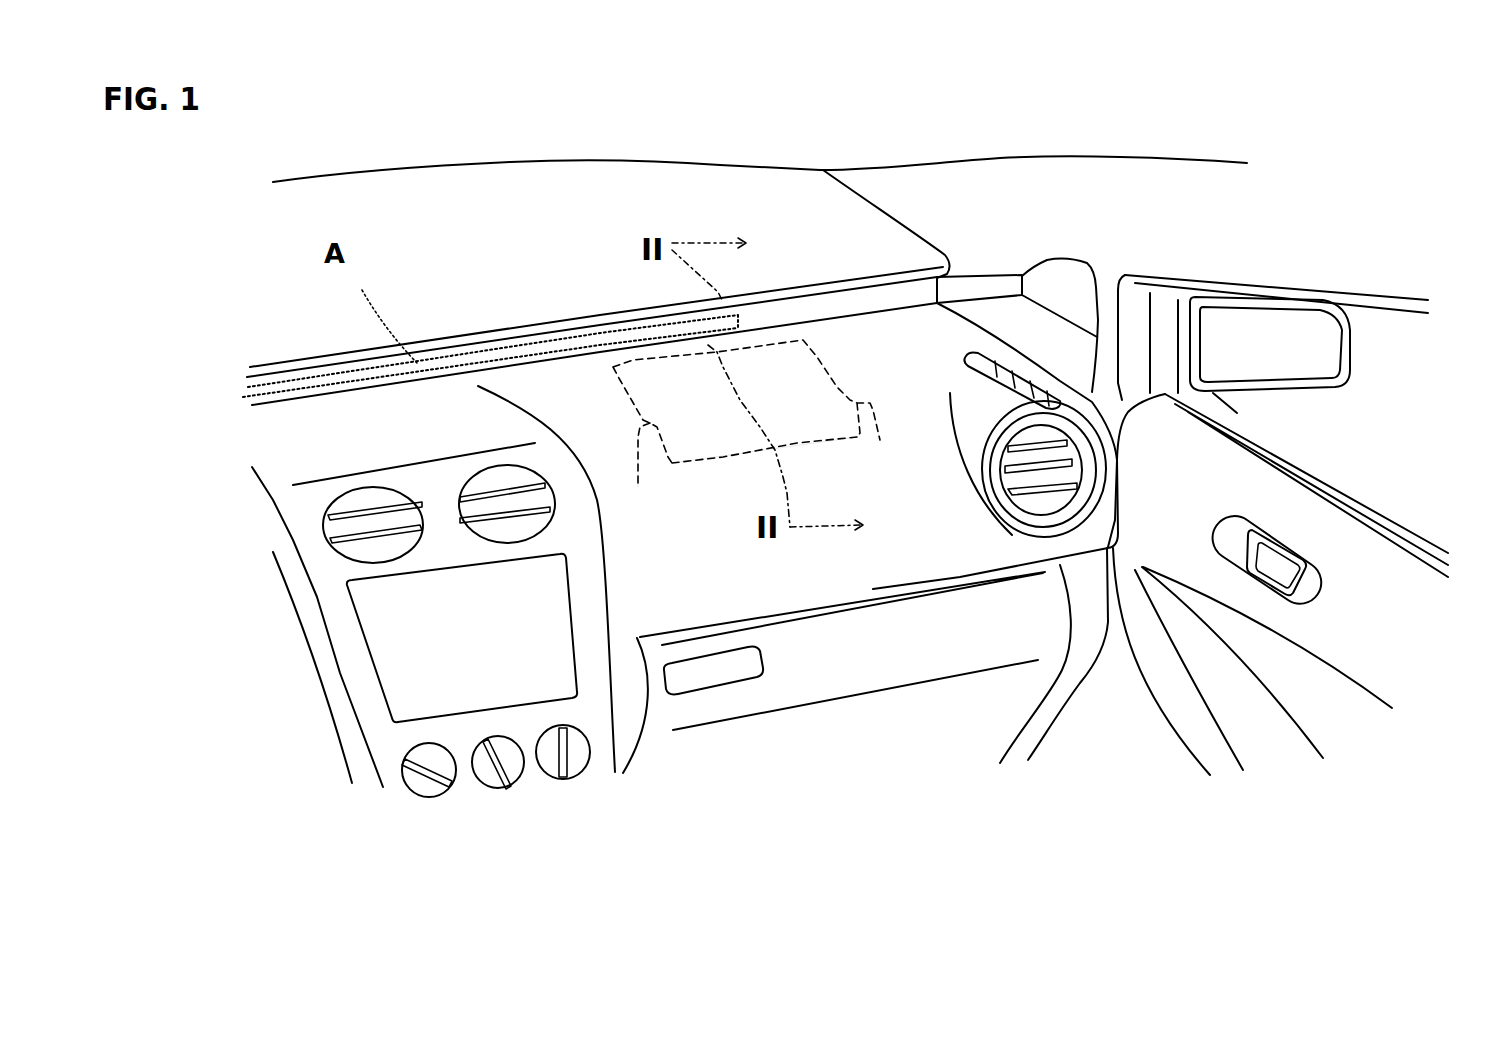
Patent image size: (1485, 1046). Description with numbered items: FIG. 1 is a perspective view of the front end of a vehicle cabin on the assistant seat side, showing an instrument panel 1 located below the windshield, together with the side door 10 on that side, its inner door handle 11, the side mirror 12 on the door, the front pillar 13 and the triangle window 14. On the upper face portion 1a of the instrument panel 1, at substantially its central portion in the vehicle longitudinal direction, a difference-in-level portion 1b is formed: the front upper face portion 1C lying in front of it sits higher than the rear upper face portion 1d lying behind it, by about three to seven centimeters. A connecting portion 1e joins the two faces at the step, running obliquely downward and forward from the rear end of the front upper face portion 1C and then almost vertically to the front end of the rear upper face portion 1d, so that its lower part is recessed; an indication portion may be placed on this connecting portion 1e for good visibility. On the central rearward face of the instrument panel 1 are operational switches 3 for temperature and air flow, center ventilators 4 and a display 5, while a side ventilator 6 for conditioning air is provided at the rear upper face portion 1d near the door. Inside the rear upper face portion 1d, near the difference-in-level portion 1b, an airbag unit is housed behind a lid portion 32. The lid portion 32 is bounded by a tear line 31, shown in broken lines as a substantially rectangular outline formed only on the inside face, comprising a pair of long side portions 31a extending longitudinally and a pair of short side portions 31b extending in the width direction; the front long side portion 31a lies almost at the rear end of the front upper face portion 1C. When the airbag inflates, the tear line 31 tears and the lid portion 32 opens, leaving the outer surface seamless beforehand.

The instrument panel 1 is at (456, 141).
The upper face portion 1a is at (596, 222).
The difference-in-level portion 1b is at (535, 350).
The front upper face portion 1C is at (728, 172).
The rear upper face portion 1d is at (855, 340).
The connecting portion 1e is at (893, 301).
The operational switches 3 is at (430, 798).
The center ventilators 4 is at (490, 467).
The display 5 is at (367, 652).
The side ventilator 6 is at (1007, 442).
The side door 10 is at (1405, 527).
The inner door handle 11 is at (1243, 543).
The side mirror 12 is at (1351, 356).
The front pillar 13 is at (1142, 165).
The triangle window 14 is at (1064, 270).
The tear line 31 is at (768, 334).
The long side portions 31a is at (630, 368).
The short side portions 31b is at (638, 487).
The lid portion 32 is at (824, 434).